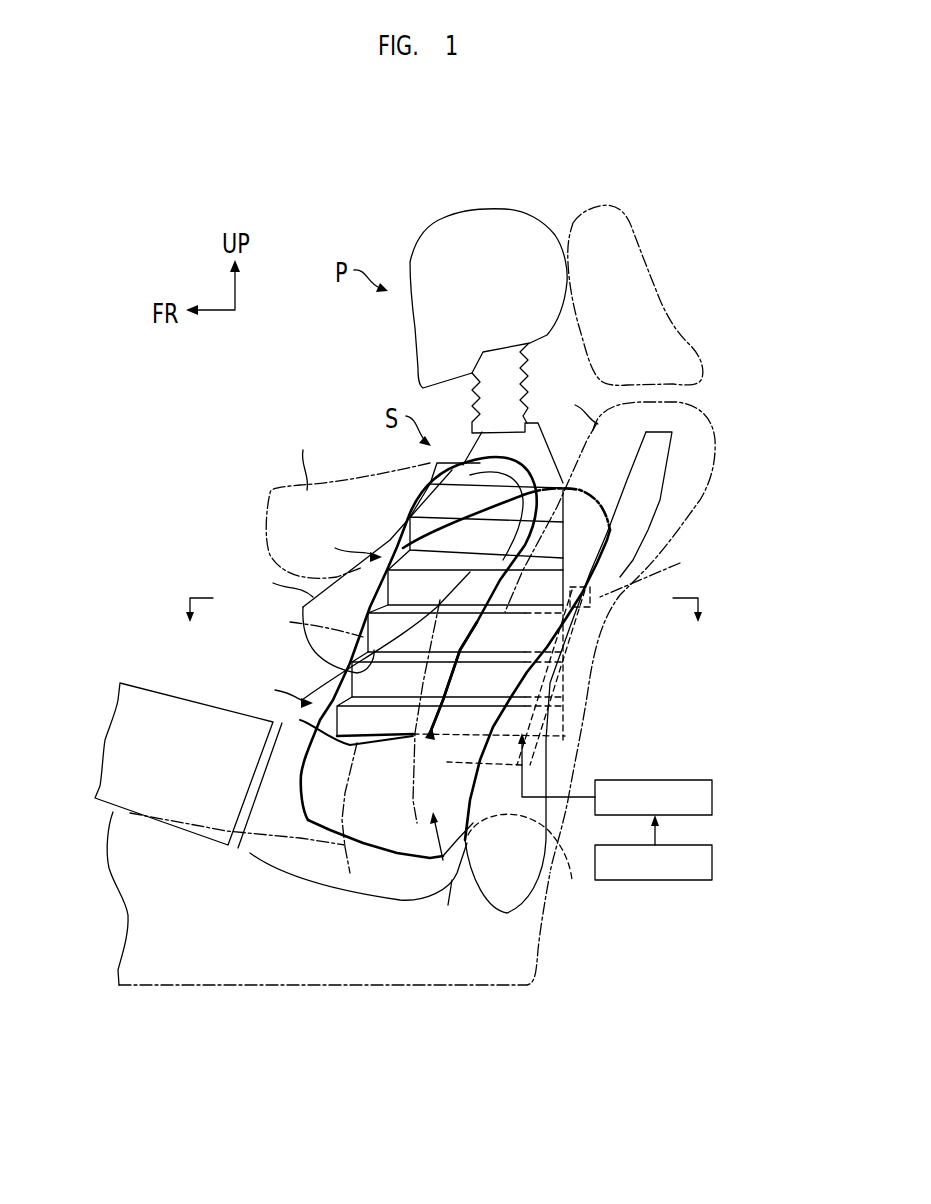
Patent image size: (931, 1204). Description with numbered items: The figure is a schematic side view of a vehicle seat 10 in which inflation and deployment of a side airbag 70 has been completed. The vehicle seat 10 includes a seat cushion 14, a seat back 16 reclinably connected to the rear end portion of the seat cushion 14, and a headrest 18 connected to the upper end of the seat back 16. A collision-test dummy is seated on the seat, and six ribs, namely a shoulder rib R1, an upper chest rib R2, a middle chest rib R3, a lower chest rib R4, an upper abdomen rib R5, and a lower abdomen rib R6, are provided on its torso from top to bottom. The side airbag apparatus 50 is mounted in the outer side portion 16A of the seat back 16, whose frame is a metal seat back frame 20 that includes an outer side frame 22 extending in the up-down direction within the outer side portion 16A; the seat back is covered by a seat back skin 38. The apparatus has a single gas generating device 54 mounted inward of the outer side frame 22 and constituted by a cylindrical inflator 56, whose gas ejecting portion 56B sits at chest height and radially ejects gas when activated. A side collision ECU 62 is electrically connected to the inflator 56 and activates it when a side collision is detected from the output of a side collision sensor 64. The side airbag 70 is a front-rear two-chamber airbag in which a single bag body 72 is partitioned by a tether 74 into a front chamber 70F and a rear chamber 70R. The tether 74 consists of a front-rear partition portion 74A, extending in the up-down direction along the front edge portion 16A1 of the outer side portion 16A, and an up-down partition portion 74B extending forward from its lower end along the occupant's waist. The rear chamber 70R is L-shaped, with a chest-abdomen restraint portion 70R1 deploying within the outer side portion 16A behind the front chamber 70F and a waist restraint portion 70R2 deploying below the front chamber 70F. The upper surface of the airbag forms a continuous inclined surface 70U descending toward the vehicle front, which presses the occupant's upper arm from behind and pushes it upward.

The vehicle seat 10 is at (249, 411).
The seat cushion 14 is at (232, 988).
The seat back 16 is at (611, 626).
The outer side portion 16A is at (583, 740).
The front edge portion 16A1 is at (475, 577).
The headrest 18 is at (632, 228).
The seat back frame 20 is at (584, 672).
The outer side frame 22 is at (563, 708).
The seat back skin 38 is at (565, 394).
The side airbag apparatus 50 is at (246, 564).
The gas generating device 54 is at (620, 657).
The inflator 56 is at (590, 672).
The gas ejecting portion 56B is at (662, 573).
The side collision ECU 62 is at (712, 797).
The side collision sensor 64 is at (712, 863).
The side airbag 70 is at (388, 678).
The front chamber 70F is at (359, 581).
The rear chamber 70R is at (567, 873).
The chest-abdomen restraint portion 70R1 is at (600, 640).
The waist restraint portion 70R2 is at (350, 850).
The inclined surface 70U is at (440, 533).
The bag body 72 is at (262, 845).
The tether 74 is at (437, 722).
The front-rear partition portion 74A is at (450, 650).
The up-down partition portion 74B is at (345, 840).
The shoulder rib R1 is at (430, 473).
The upper chest rib R2 is at (403, 538).
The middle chest rib R3 is at (383, 592).
The lower chest rib R4 is at (368, 635).
The upper abdomen rib R5 is at (352, 683).
The lower abdomen rib R6 is at (247, 728).